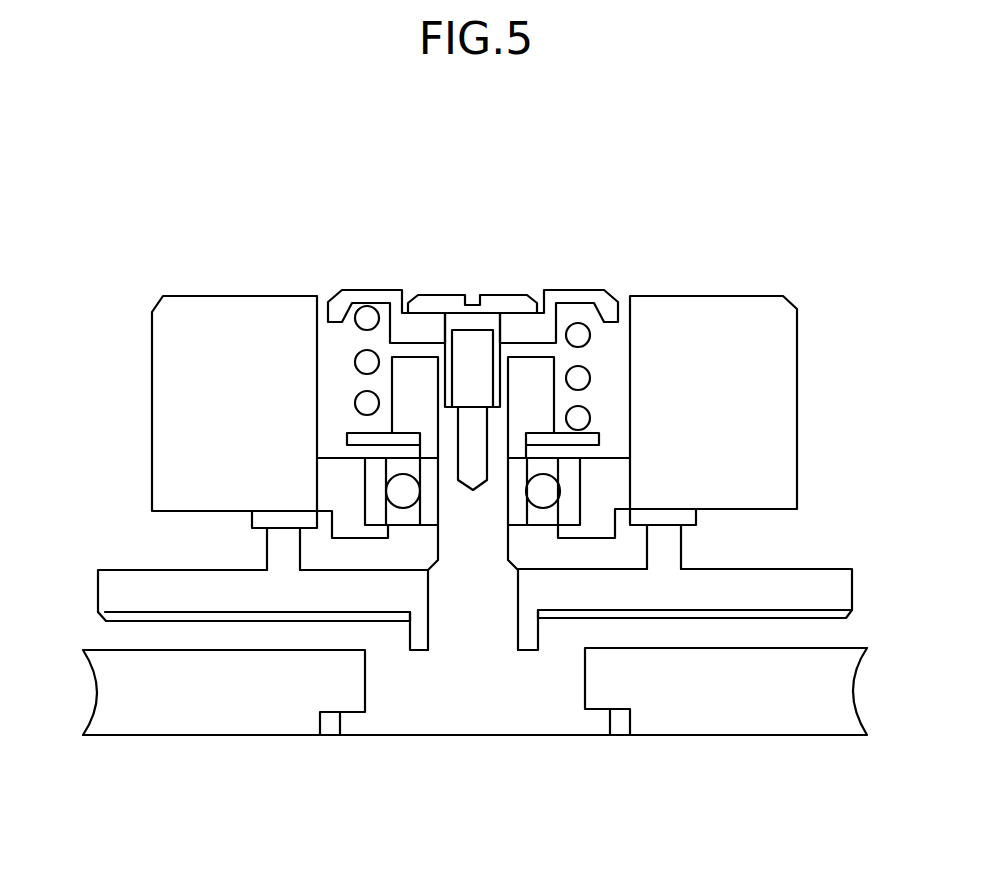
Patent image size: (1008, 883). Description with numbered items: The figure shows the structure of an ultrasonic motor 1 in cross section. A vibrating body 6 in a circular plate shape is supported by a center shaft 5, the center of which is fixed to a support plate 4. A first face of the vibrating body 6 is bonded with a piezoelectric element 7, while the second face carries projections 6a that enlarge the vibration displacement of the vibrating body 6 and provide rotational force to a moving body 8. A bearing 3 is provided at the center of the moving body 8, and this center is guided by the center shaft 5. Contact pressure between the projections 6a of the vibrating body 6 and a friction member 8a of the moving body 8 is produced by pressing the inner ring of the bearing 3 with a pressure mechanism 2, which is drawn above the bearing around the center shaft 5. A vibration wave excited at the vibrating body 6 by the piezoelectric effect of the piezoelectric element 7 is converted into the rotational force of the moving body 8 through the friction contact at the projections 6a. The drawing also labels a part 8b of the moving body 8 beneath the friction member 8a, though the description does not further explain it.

The ultrasonic motor 1 is at (720, 204).
The pressure mechanism 2 is at (584, 376).
The bearing 3 is at (573, 488).
The support plate 4 is at (737, 698).
The center shaft 5 is at (455, 608).
The vibrating body 6 is at (265, 598).
The projections 6a is at (280, 551).
The piezoelectric element 7 is at (327, 612).
The moving body 8 is at (413, 355).
The friction member 8a is at (190, 312).
The magnet holder 8b is at (282, 517).